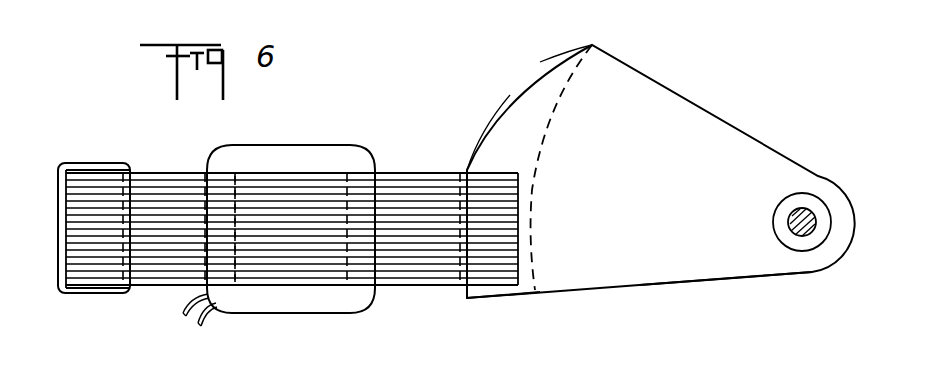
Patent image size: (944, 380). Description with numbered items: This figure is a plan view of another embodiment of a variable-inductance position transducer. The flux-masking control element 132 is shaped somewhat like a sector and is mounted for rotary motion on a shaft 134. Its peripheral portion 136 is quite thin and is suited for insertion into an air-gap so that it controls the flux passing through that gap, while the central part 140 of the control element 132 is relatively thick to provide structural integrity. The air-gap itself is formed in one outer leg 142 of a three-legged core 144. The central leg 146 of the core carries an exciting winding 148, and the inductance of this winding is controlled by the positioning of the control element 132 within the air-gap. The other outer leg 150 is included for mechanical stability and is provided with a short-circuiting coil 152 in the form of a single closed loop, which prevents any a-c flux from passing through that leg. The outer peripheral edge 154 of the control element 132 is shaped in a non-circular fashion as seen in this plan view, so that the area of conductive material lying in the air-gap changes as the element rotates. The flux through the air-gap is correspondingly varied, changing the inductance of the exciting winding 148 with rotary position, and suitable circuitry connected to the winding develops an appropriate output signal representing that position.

The flux-masking element 132 is at (802, 74).
The shaft 134 is at (797, 217).
The peripheral portion 136 is at (527, 102).
The central part 140 is at (687, 257).
The outer leg 142 is at (508, 260).
The three-legged core 144 is at (175, 145).
The central leg 146 is at (262, 250).
The exciting winding 148 is at (333, 297).
The other outer leg 150 is at (100, 263).
The short-circuiting coil 152 is at (80, 168).
The outer peripheral edge 154 is at (475, 143).